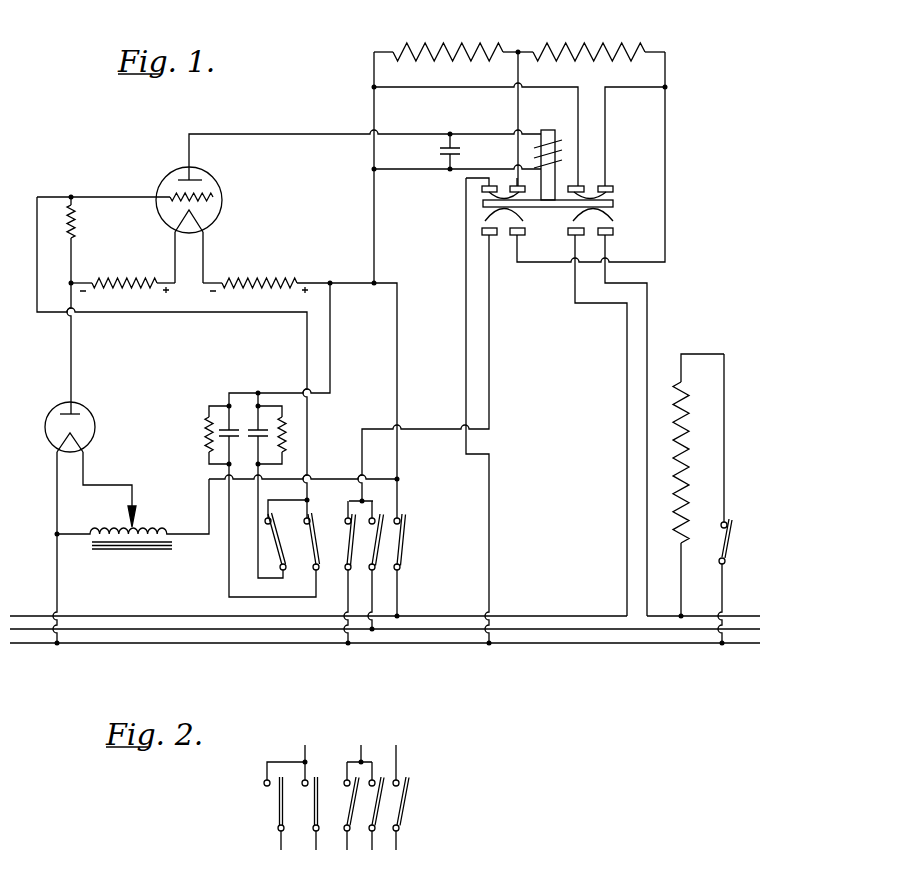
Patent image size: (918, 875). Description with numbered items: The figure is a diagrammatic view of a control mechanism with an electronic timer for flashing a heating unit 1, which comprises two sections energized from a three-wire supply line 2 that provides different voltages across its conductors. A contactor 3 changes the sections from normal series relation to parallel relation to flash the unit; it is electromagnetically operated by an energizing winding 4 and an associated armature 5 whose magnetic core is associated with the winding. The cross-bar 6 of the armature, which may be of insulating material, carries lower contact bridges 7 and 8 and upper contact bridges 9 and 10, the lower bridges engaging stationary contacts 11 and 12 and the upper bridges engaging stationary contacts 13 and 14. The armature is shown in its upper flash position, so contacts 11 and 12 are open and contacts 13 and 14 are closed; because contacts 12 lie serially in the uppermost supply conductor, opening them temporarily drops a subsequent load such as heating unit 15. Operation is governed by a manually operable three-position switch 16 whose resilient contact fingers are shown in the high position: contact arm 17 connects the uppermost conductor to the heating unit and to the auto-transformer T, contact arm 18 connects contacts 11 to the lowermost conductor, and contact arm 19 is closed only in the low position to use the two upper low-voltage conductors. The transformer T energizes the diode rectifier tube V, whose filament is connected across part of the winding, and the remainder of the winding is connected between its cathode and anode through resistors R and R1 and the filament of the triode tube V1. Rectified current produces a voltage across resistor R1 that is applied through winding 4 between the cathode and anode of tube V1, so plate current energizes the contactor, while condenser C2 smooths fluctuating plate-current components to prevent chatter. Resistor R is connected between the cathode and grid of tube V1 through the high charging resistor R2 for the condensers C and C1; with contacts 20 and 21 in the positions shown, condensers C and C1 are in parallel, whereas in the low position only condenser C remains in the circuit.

In FIG. 1, the heating unit 1 is at (538, 49).
In FIG. 1, the three-wire supply line 2 is at (530, 643).
In FIG. 1, the contactor 3 is at (629, 161).
In FIG. 1, the energizing winding 4 is at (557, 152).
In FIG. 1, the armature 5 is at (548, 130).
In FIG. 1, the cross-bar 6 is at (551, 207).
In FIG. 1, the lower contact bridge 7 is at (504, 220).
In FIG. 1, the lower contact bridge 8 is at (614, 219).
In FIG. 1, the upper contact bridge 9 is at (489, 195).
In FIG. 1, the upper contact bridge 10 is at (613, 192).
In FIG. 1, the stationary contacts 11 is at (494, 236).
In FIG. 1, the stationary contacts 12 is at (581, 236).
In FIG. 1, the stationary contacts 13 is at (507, 194).
In FIG. 1, the stationary contacts 14 is at (602, 186).
In FIG. 1, the heating unit 15 is at (687, 457).
In FIG. 1, the three-position switch 16 is at (341, 542).
In FIG. 2, the three-position switch 16 is at (342, 755).
In FIG. 1, the contact arm 17 is at (405, 520).
In FIG. 2, the contact arm 17 is at (406, 802).
In FIG. 1, the contact arm 18 is at (351, 536).
In FIG. 2, the contact arm 18 is at (349, 808).
In FIG. 1, the contact arm 19 is at (377, 541).
In FIG. 2, the contact arm 19 is at (376, 809).
In FIG. 1, the contact 20 is at (312, 516).
In FIG. 2, the contact 20 is at (314, 808).
In FIG. 1, the contact 21 is at (277, 532).
In FIG. 2, the contact 21 is at (278, 806).
In FIG. 1, the triode tube V1 is at (165, 179).
In FIG. 1, the diode rectifier tube V is at (94, 417).
In FIG. 1, the resistor R is at (123, 277).
In FIG. 1, the resistor R1 is at (288, 277).
In FIG. 1, the charging resistor R2 is at (74, 239).
In FIG. 1, the condenser C is at (234, 435).
In FIG. 1, the condenser C1 is at (264, 438).
In FIG. 1, the condenser C2 is at (459, 151).
In FIG. 1, the auto-transformer T is at (166, 532).